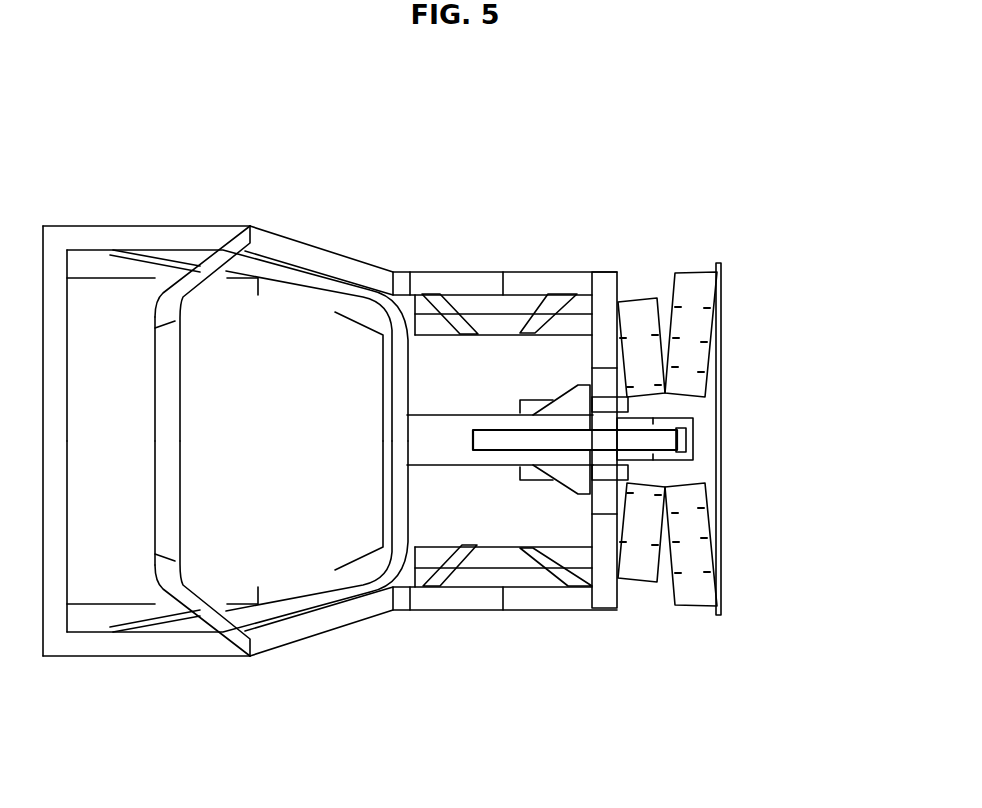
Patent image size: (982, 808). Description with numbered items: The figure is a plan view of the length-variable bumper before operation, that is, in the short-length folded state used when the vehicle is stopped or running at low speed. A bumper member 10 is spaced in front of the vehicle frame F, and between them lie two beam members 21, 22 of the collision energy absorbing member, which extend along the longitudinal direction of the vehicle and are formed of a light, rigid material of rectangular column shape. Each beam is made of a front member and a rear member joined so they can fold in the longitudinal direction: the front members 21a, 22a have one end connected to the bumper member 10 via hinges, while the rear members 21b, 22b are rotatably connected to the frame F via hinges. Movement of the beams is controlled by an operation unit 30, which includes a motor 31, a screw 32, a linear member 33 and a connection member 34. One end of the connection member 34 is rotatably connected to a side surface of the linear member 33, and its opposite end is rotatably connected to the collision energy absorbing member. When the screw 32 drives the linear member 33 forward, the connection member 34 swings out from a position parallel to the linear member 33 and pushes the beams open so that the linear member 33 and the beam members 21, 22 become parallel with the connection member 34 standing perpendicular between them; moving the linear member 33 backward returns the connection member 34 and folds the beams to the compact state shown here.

The frame F is at (604, 272).
The bumper member 10 is at (721, 372).
The beam member 21 is at (725, 150).
The front member 21a is at (698, 273).
The rear member 21b is at (637, 300).
The beam member 22 is at (690, 697).
The front member 22a is at (693, 600).
The rear member 22b is at (632, 578).
The operation unit 30 is at (790, 475).
The motor 31 is at (687, 441).
The screw 32 is at (583, 466).
The linear member 33 is at (597, 481).
The connection member 34 is at (653, 441).